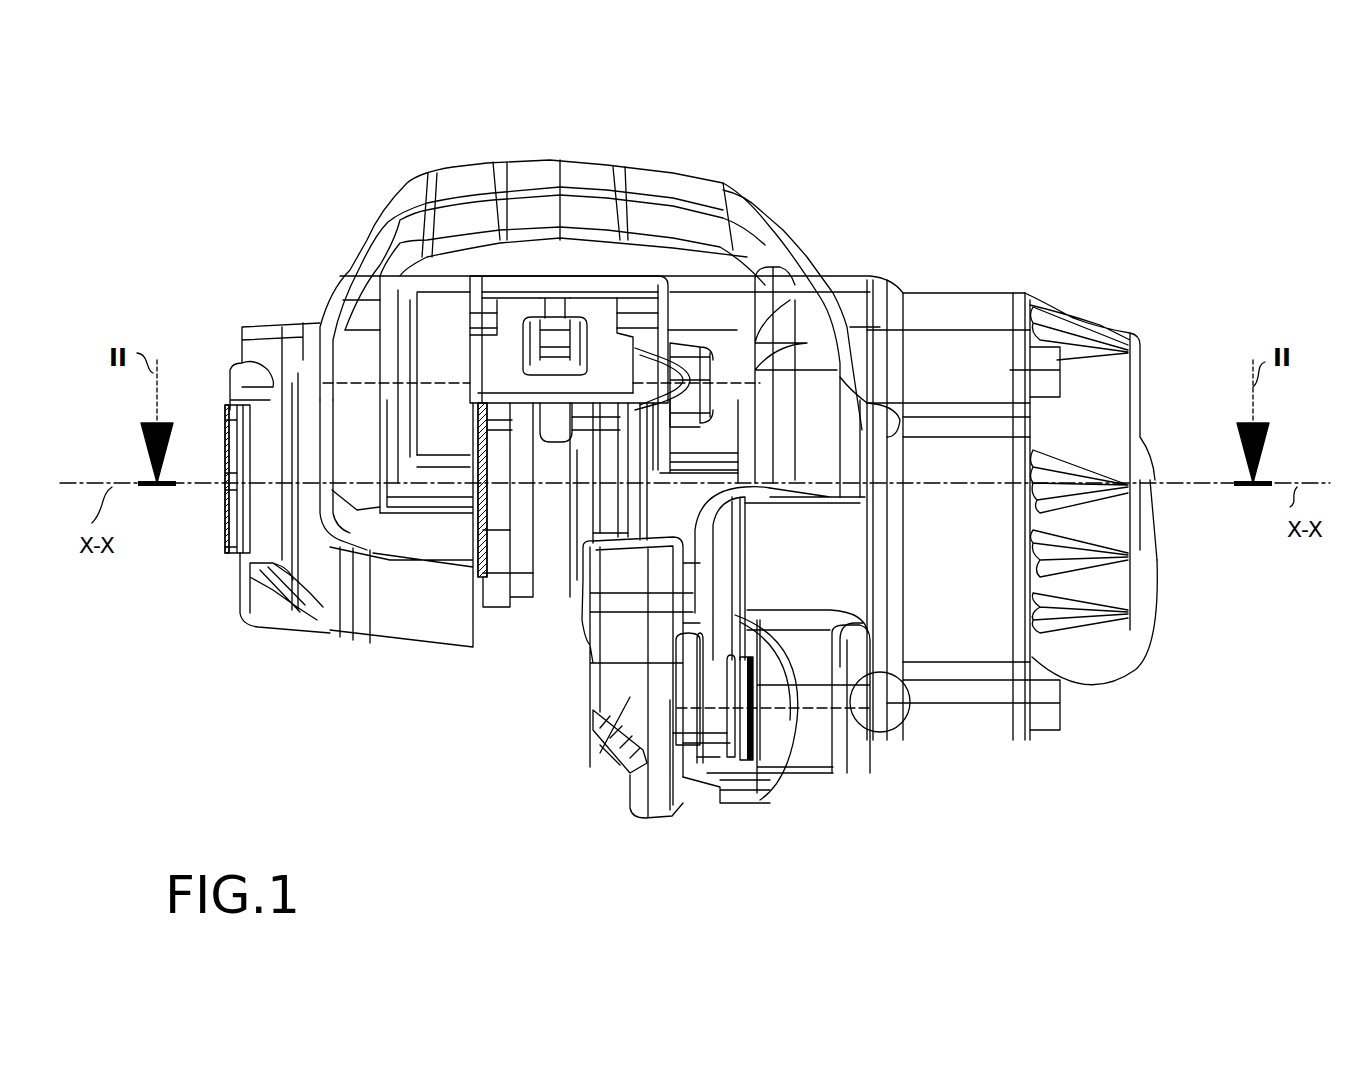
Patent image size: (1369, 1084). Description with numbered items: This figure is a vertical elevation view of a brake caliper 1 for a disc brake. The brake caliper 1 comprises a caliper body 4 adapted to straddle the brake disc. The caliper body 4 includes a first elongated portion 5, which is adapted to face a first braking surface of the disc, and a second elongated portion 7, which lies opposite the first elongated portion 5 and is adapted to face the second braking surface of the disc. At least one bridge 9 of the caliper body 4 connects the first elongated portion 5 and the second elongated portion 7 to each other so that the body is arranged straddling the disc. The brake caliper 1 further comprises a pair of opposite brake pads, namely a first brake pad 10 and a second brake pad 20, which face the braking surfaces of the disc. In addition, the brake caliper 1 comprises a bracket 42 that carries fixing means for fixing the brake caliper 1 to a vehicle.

The brake caliper 1 is at (218, 206).
The bridge 9 is at (575, 207).
The caliper body 4 is at (743, 260).
The second elongated portion 7 is at (323, 583).
The second brake pad 20 is at (500, 587).
The first brake pad 10 is at (570, 597).
The bracket 42 is at (633, 755).
The first elongated portion 5 is at (738, 620).